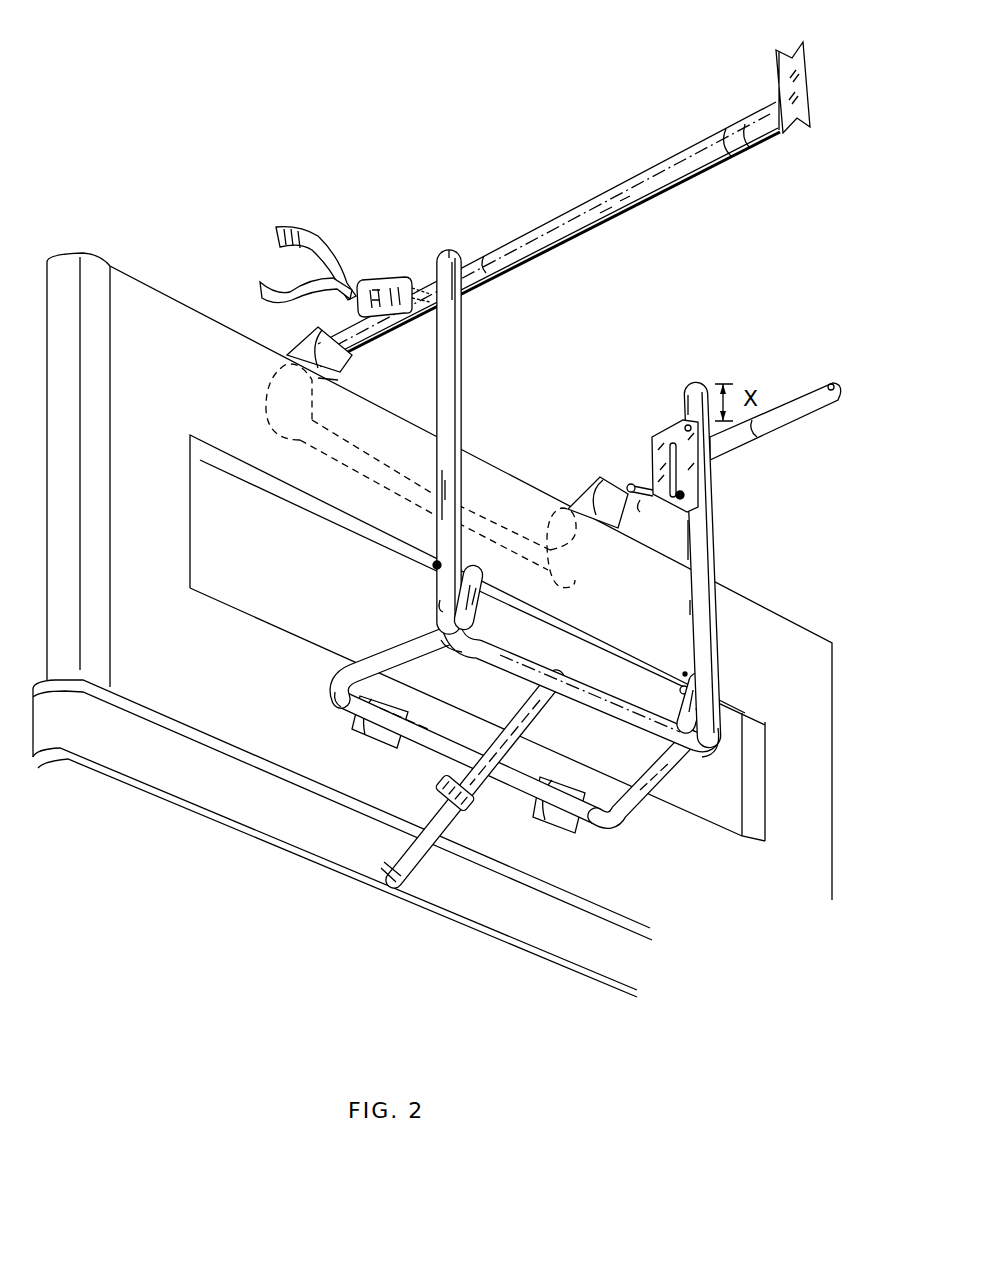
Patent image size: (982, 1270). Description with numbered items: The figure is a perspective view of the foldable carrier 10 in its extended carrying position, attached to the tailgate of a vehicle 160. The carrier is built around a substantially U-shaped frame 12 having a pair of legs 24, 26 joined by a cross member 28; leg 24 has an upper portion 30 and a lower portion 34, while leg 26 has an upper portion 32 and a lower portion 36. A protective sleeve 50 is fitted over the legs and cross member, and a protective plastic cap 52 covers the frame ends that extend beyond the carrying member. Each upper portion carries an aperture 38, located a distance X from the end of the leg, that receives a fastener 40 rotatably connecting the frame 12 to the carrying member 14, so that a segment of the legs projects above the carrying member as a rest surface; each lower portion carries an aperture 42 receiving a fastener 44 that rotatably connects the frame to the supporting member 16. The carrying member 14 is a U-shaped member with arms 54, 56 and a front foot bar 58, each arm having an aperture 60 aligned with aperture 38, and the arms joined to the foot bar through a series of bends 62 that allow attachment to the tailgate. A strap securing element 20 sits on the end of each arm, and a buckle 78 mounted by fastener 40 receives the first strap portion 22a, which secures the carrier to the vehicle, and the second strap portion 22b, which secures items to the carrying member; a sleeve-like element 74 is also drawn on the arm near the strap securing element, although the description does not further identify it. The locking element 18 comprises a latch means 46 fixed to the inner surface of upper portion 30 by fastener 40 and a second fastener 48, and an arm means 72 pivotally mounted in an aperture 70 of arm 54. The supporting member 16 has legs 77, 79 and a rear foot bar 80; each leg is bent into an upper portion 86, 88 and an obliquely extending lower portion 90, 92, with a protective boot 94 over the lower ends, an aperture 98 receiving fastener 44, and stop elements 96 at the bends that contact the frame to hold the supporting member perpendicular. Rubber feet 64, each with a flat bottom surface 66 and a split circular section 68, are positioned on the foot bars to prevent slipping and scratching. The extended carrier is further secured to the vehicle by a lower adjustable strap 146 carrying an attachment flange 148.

The foldable carrier 10 is at (616, 61).
The frame 12 is at (507, 405).
The carrying member 14 is at (572, 270).
The supporting member 16 is at (500, 754).
The locking element 18 is at (624, 436).
The strap securing element 20 is at (806, 80).
The first strap portion 22a is at (285, 292).
The second strap portion 22b is at (335, 205).
The leg 24 is at (682, 601).
The leg 26 is at (477, 502).
The cross member 28 is at (605, 655).
The upper portion 30 is at (719, 513).
The upper portion 32 is at (461, 313).
The lower portion 34 is at (721, 644).
The lower portion 36 is at (436, 497).
The aperture 38 is at (679, 402).
The fastener 40 is at (610, 355).
The aperture 42 is at (440, 607).
The fastener 44 is at (433, 568).
The latch means 46 is at (700, 466).
The fastener 48 is at (712, 490).
The protective sleeve 50 is at (438, 385).
The protective plastic cap 52 is at (452, 248).
The arm 54 is at (845, 392).
The arm 56 is at (622, 202).
The front foot bar 58 is at (322, 508).
The aperture 60 is at (428, 318).
The bends 62 is at (315, 406).
The feet 64 is at (305, 332).
The flat bottom surface 66 is at (328, 383).
The split circular section 68 is at (430, 700).
The aperture 70 is at (630, 486).
The arm means 72 is at (638, 505).
The sleeve 74 is at (737, 142).
The leg 77 is at (350, 640).
The buckle 78 is at (360, 280).
The leg 79 is at (655, 805).
The rear foot bar 80 is at (507, 805).
The upper portion 86 is at (340, 665).
The upper portion 88 is at (618, 820).
The lower portion 90 is at (485, 628).
The lower portion 92 is at (679, 690).
The protective boot 94 is at (482, 565).
The stop elements 96 is at (493, 667).
The aperture 98 is at (722, 700).
The lower adjustable strap 146 is at (445, 862).
The attachment flange 148 is at (396, 898).
The vehicle 160 is at (178, 668).